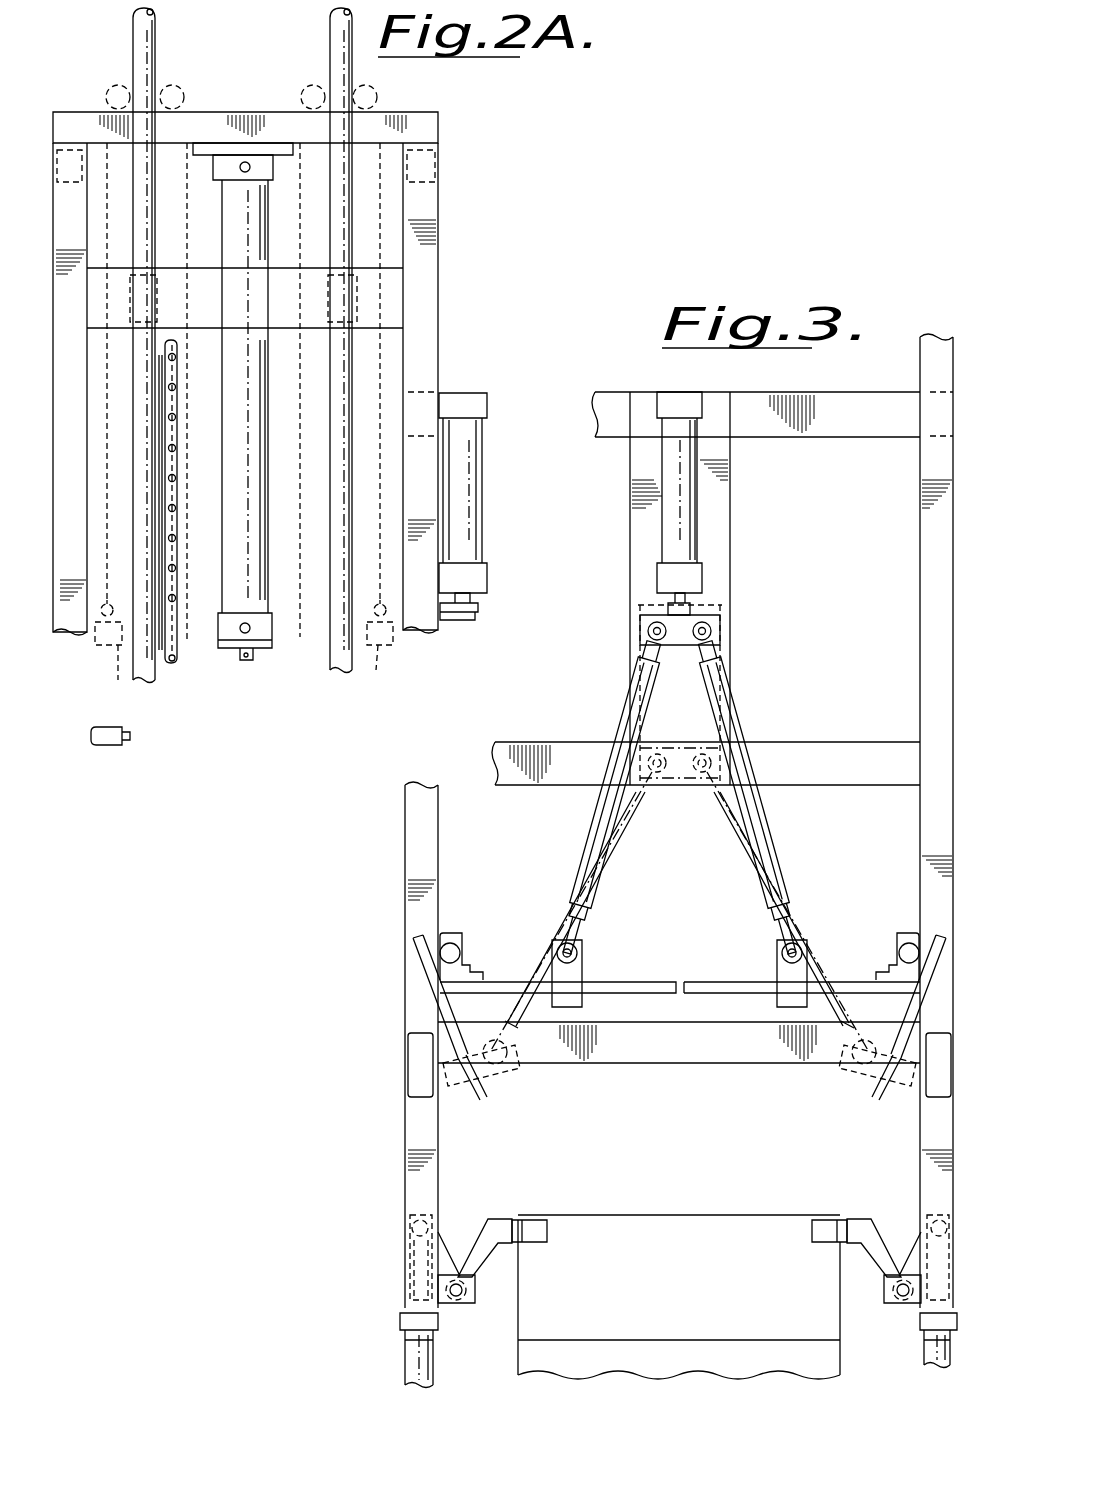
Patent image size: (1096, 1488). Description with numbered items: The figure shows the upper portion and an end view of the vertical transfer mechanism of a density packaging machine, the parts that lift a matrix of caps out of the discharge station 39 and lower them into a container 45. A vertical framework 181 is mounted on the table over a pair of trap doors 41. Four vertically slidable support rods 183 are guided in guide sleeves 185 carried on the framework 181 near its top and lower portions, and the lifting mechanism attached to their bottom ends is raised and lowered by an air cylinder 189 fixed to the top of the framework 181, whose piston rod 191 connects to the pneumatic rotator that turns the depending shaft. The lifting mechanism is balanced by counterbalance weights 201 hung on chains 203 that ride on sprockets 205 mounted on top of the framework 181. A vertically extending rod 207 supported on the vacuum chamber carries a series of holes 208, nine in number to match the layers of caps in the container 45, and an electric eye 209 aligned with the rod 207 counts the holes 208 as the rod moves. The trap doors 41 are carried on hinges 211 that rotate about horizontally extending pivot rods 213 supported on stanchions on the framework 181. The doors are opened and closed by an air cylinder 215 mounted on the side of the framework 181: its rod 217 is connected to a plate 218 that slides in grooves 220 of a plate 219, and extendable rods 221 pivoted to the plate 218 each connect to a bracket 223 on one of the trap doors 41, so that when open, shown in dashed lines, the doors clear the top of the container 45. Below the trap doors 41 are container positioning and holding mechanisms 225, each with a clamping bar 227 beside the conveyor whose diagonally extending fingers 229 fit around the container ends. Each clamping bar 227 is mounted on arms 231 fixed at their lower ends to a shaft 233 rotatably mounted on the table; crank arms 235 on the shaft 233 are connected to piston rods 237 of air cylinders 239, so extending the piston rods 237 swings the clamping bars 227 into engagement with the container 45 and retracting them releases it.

In FIG. 3, the discharge station 39 is at (688, 912).
In FIG. 3, the trap doors 41 is at (704, 996).
In FIG. 3, the container 45 is at (526, 1356).
In FIG. 2A, the vertical framework 181 is at (428, 362).
In FIG. 3, the vertical framework 181 is at (410, 878).
In FIG. 2A, the support rods 183 is at (338, 28).
In FIG. 2A, the guide sleeves 185 is at (328, 300).
In FIG. 2A, the air cylinder 189 is at (232, 270).
In FIG. 2A, the piston rod 191 is at (248, 662).
In FIG. 2A, the counterbalance weights 201 is at (104, 684).
In FIG. 2A, the chains 203 is at (106, 104).
In FIG. 2A, the sprockets 205 is at (302, 92).
In FIG. 2A, the vertically extending rod 207 is at (174, 664).
In FIG. 2A, the holes 208 is at (176, 417).
In FIG. 2A, the electric eye 209 is at (110, 747).
In FIG. 2A, the air cylinder 215 is at (478, 494).
In FIG. 3, the air cylinder 215 is at (688, 532).
In FIG. 2A, the rod 217 is at (470, 606).
In FIG. 3, the rod 217 is at (690, 602).
In FIG. 3, the plate 218 is at (679, 648).
In FIG. 3, the plate 219 is at (665, 718).
In FIG. 3, the grooves 220 is at (636, 606).
In FIG. 3, the extendable rods 221 is at (600, 828).
In FIG. 3, the bracket 223 is at (584, 972).
In FIG. 3, the hinges 211 is at (446, 934).
In FIG. 3, the pivot rods 213 is at (462, 950).
In FIG. 3, the container positioning and holding mechanisms 225 is at (514, 1200).
In FIG. 3, the clamping bar 227 is at (504, 1248).
In FIG. 3, the fingers 229 is at (548, 1230).
In FIG. 3, the arms 231 is at (494, 1218).
In FIG. 3, the shaft 233 is at (456, 1300).
In FIG. 3, the crank arms 235 is at (410, 1212).
In FIG. 3, the piston rods 237 is at (408, 1284).
In FIG. 3, the air cylinders 239 is at (404, 1352).